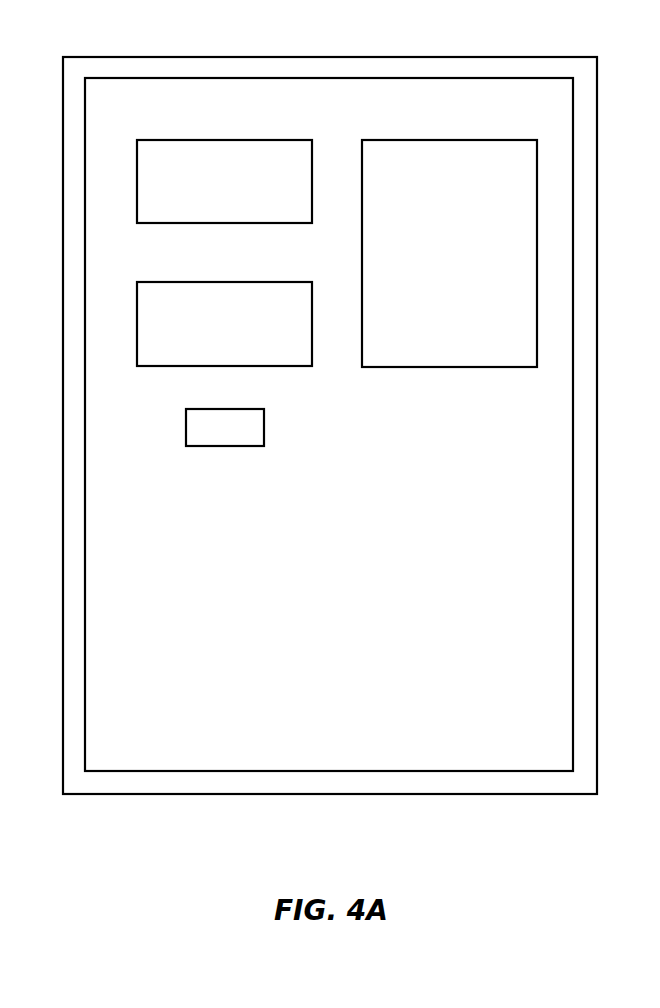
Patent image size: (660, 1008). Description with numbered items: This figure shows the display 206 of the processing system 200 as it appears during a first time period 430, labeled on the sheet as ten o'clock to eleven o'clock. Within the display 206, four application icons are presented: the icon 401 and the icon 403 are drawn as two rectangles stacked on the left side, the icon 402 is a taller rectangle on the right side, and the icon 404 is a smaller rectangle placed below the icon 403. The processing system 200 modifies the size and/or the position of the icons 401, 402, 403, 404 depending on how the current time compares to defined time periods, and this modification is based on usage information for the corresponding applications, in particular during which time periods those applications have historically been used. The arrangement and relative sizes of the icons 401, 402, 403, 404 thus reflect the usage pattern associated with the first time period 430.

The processing system 200 is at (128, 56).
The display 206 is at (216, 77).
The icon 401 is at (224, 181).
The icon 402 is at (449, 253).
The icon 403 is at (224, 324).
The icon 404 is at (225, 427).
The first time period 430 is at (391, 832).